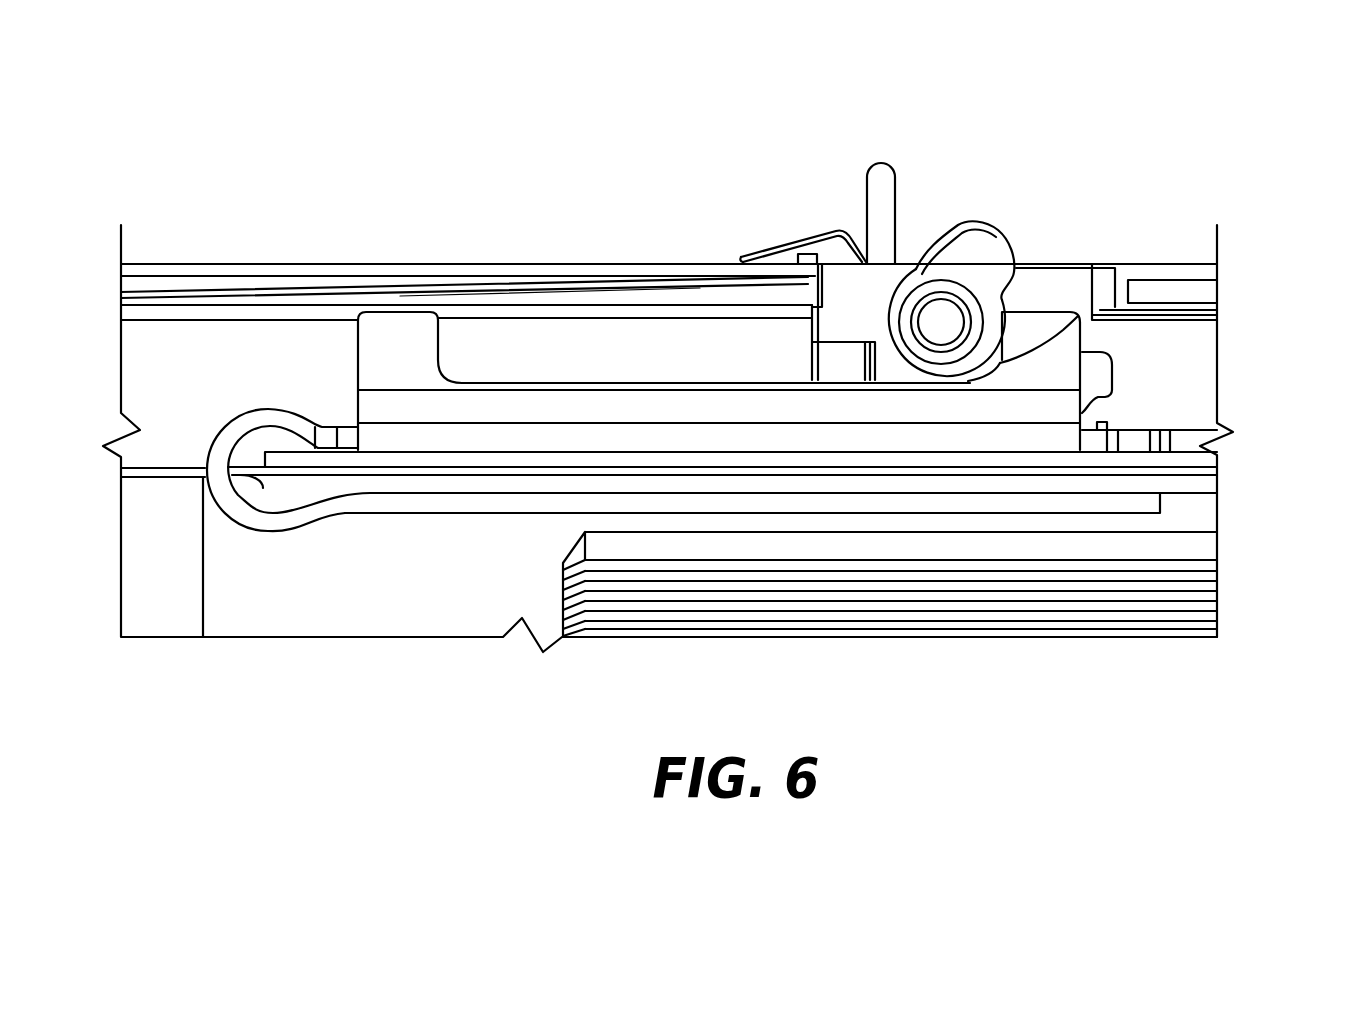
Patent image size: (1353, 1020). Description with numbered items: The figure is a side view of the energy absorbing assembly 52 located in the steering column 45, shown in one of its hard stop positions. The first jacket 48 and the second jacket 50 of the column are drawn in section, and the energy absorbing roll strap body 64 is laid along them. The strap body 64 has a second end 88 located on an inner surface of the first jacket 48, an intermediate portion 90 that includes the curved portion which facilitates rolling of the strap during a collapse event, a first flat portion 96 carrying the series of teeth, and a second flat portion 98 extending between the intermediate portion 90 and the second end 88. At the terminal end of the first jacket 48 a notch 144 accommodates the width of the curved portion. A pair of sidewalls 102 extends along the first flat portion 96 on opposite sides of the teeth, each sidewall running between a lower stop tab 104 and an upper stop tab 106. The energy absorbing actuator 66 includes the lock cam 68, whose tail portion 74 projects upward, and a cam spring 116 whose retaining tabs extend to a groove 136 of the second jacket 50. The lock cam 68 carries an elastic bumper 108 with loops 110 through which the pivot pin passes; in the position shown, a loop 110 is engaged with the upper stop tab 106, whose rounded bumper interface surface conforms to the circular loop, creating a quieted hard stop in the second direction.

The steering column 45 is at (1228, 130).
The first jacket 48 is at (1229, 474).
The second jacket 50 is at (148, 236).
The energy absorbing assembly 52 is at (1103, 171).
The strap body 64 is at (1188, 419).
The energy absorbing actuator 66 is at (938, 180).
The lock cam 68 is at (856, 157).
The tail portion 74 is at (882, 170).
The second end 88 is at (1152, 512).
The intermediate portion 90 is at (204, 420).
The first flat portion 96 is at (670, 404).
The second flat portion 98 is at (797, 498).
The sidewalls 102 is at (570, 402).
The lower stop tab 104 is at (404, 322).
The upper stop tab 106 is at (1043, 322).
The bumper 108 is at (987, 220).
The loops 110 is at (893, 322).
The cam spring 116 is at (789, 231).
The groove 136 is at (715, 298).
The notch 144 is at (242, 477).